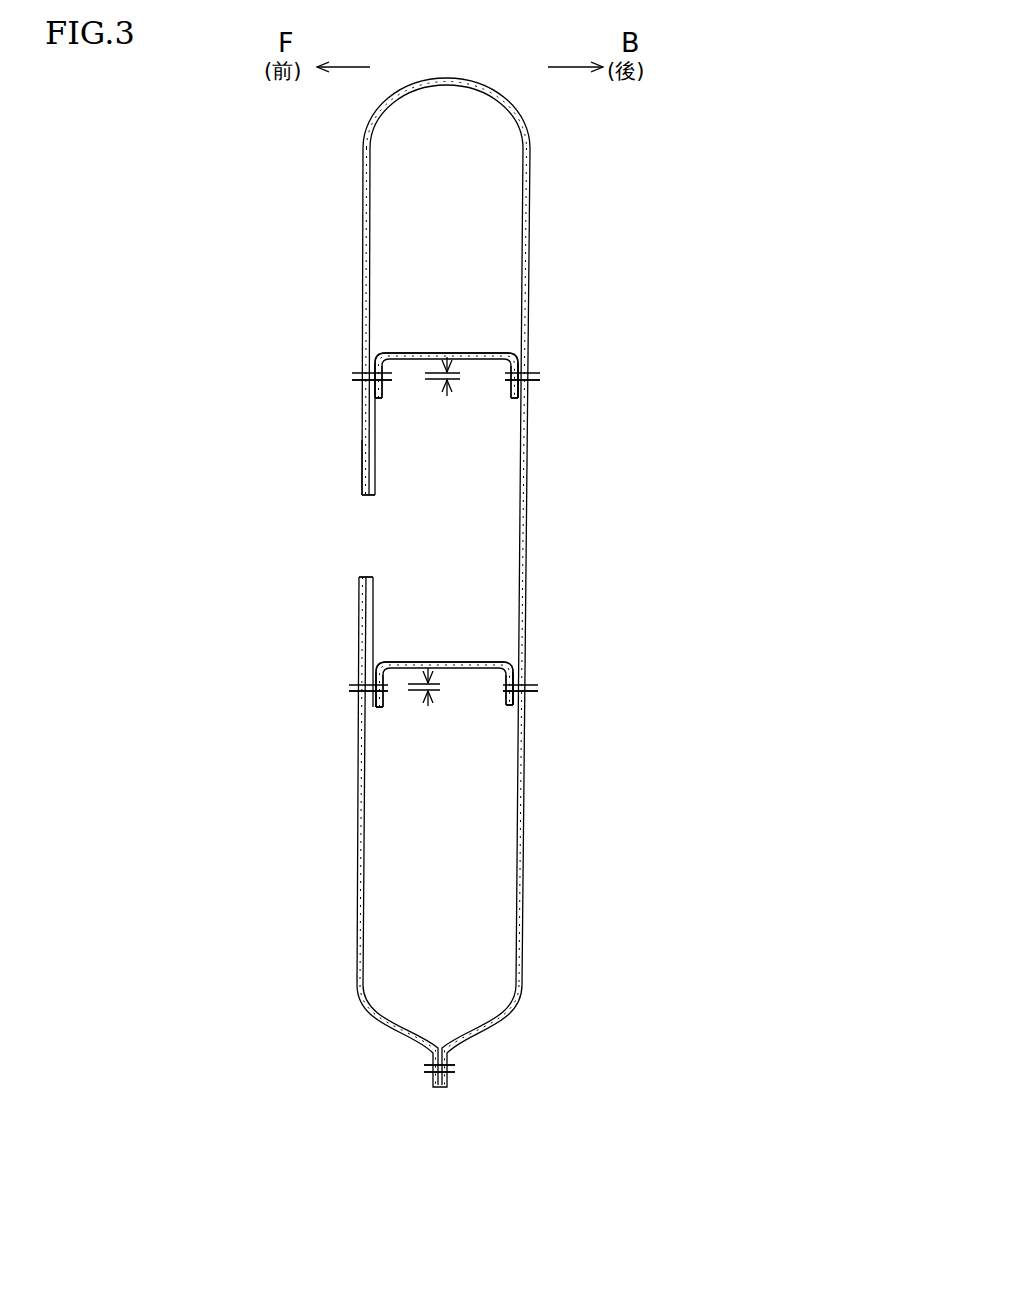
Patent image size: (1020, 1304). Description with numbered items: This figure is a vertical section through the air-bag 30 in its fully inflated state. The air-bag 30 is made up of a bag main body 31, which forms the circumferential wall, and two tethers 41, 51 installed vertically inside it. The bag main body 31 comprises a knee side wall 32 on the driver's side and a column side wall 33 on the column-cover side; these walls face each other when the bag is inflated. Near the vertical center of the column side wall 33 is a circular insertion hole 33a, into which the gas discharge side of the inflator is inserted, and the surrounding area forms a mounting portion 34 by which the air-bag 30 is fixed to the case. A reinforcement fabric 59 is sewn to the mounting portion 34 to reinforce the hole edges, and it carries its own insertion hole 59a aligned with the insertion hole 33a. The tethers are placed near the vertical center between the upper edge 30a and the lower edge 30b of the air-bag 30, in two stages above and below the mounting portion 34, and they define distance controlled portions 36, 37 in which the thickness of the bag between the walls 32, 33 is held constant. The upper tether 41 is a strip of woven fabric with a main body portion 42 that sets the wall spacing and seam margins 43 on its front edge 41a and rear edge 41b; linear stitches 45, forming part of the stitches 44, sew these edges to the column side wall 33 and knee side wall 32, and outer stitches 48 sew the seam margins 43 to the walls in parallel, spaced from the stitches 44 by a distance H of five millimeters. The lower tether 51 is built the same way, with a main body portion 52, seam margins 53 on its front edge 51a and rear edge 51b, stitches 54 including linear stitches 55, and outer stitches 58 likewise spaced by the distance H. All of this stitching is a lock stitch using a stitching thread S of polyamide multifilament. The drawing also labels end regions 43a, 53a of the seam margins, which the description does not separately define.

The air-bag 30 is at (283, 146).
The upper edge 30a is at (449, 74).
The lower edge 30b is at (462, 1082).
The bag main body 31 is at (546, 190).
The knee side wall 32 is at (529, 148).
The column side wall 33 is at (364, 228).
The insertion hole 33a is at (365, 577).
The mounting portion 34 is at (354, 460).
The distance controlled portion 36 is at (558, 355).
The distance controlled portion 37 is at (553, 652).
The upper tether 41 is at (468, 330).
The front edge 41a is at (377, 351).
The rear edge 41b is at (527, 350).
The main body portion 42 is at (440, 353).
The seam margins 43 is at (388, 394).
The upper partition leg end 43a is at (526, 398).
The stitches 44 is at (346, 371).
The linear stitches 45 is at (551, 373).
The outer stitches 48 is at (346, 382).
The lower tether 51 is at (480, 692).
The front edge 51a is at (378, 662).
The rear edge 51b is at (527, 660).
The main body portion 52 is at (432, 662).
The seam margins 53 is at (386, 710).
The lower partition leg end 53a is at (512, 712).
The stitches 54 is at (346, 680).
The linear stitches 55 is at (548, 682).
The outer stitches 58 is at (346, 690).
The reinforcement fabric 59 is at (368, 497).
The insertion hole 59a is at (369, 577).
The stitching thread S is at (424, 1070).
The distance H is at (449, 541).